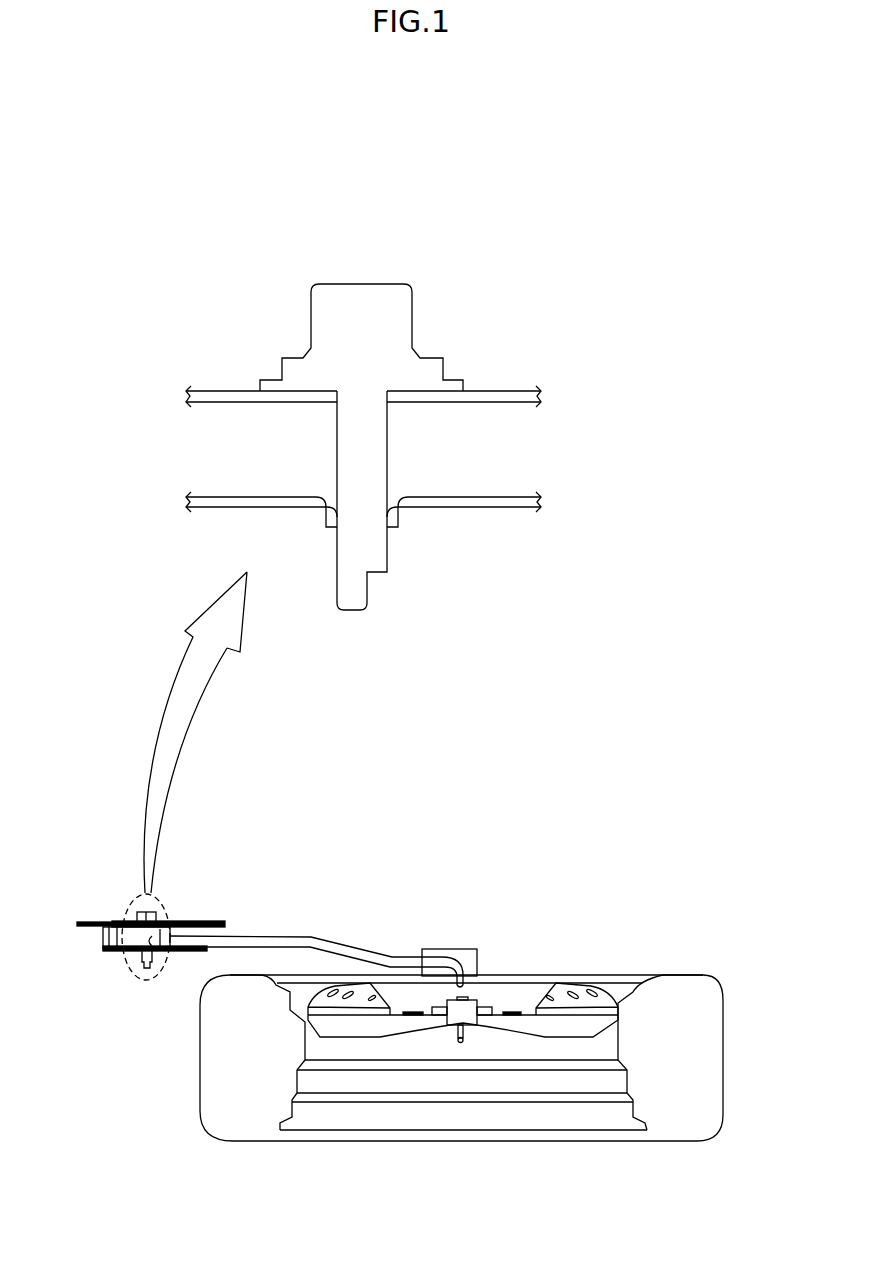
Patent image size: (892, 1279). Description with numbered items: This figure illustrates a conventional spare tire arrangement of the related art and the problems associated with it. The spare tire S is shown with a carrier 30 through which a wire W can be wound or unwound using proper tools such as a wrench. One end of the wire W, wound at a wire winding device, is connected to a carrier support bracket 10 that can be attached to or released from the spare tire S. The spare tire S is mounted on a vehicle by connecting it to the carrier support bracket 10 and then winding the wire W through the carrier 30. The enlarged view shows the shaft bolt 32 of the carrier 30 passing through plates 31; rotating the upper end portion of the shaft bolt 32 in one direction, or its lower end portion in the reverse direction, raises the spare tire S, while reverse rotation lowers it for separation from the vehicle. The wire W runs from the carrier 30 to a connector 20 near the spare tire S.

The carrier support bracket 10 is at (472, 1013).
The connector 20 is at (467, 953).
The carrier 30 is at (185, 920).
The plates 31 is at (488, 500).
The shaft bolt 32 is at (358, 433).
The wire W is at (312, 937).
The spare tire S is at (693, 1058).